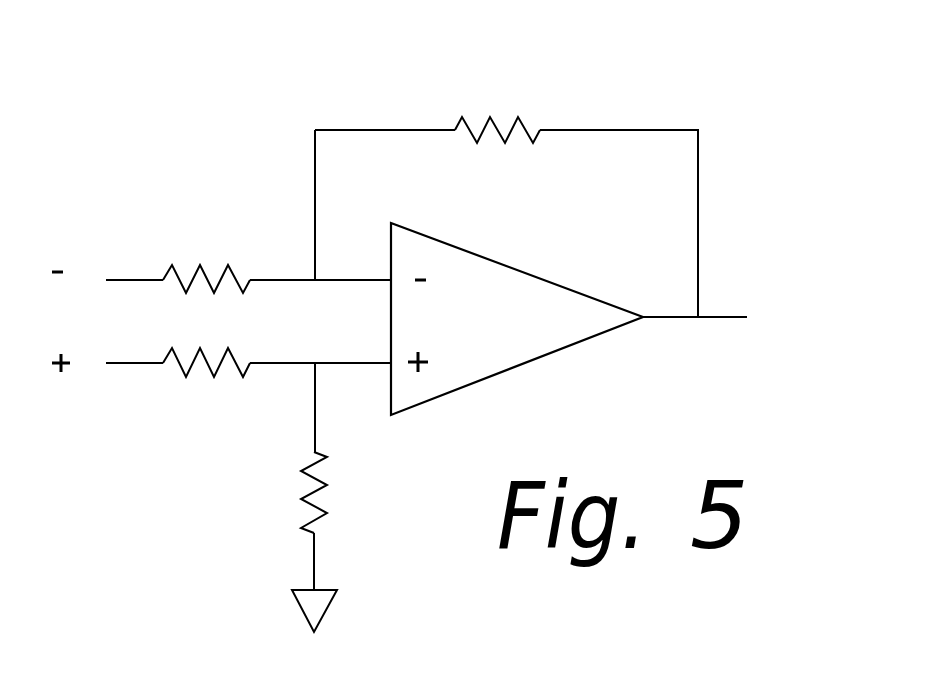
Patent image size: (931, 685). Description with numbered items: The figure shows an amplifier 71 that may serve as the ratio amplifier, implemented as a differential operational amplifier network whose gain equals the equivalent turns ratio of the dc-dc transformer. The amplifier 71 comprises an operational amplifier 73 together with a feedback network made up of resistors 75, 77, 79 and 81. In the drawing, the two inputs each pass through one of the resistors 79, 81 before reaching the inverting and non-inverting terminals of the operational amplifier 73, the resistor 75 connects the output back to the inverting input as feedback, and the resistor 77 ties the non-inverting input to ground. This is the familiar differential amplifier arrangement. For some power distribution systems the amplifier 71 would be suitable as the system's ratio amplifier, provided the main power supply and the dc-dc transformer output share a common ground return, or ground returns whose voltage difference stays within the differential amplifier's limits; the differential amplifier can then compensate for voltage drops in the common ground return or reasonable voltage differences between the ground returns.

The amplifier 71 is at (262, 72).
The operational amplifier 73 is at (513, 247).
The resistor 75 is at (530, 103).
The resistor 77 is at (283, 503).
The resistor 79 is at (240, 248).
The resistor 81 is at (152, 388).